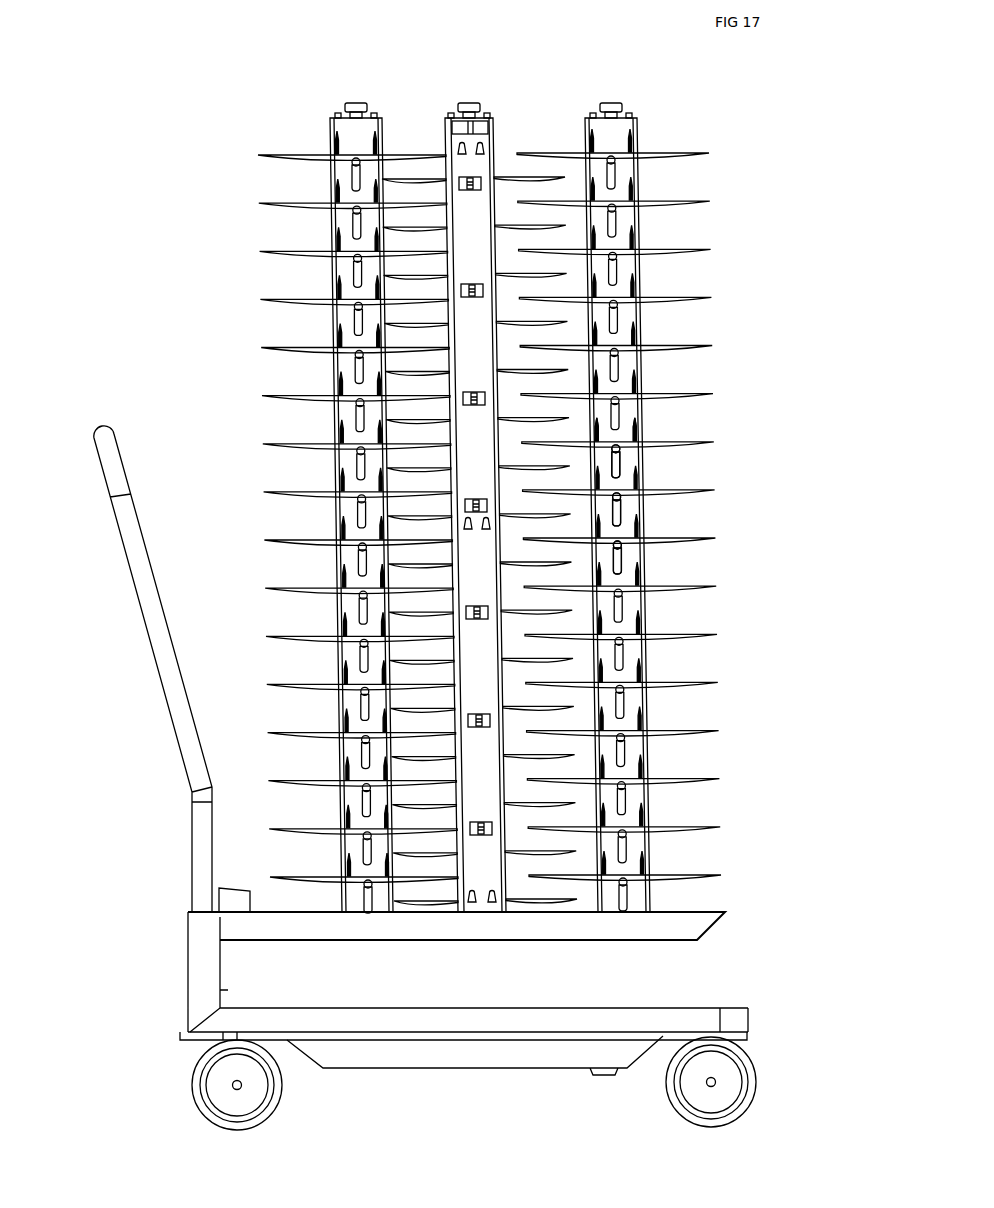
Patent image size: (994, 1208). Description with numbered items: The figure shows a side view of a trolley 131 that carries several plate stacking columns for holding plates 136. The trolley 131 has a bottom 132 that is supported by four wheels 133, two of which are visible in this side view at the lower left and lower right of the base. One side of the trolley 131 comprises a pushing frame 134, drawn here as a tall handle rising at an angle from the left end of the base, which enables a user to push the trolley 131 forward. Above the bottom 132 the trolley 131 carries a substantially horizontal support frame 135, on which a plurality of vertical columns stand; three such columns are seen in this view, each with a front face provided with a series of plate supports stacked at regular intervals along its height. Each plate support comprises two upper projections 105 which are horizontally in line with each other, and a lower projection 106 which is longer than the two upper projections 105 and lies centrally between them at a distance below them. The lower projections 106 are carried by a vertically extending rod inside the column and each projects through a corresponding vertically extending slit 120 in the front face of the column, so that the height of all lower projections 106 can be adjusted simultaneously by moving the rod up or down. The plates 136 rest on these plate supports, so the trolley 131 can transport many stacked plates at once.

The trolley 131 is at (439, 508).
The upper projections 105 is at (638, 413).
The slit 120 is at (625, 465).
The lower projection 106 is at (627, 543).
The plates 136 is at (720, 675).
The pushing frame 134 is at (148, 568).
The support frame 135 is at (515, 943).
The bottom 132 is at (412, 1071).
The wheels 133 is at (262, 1122).